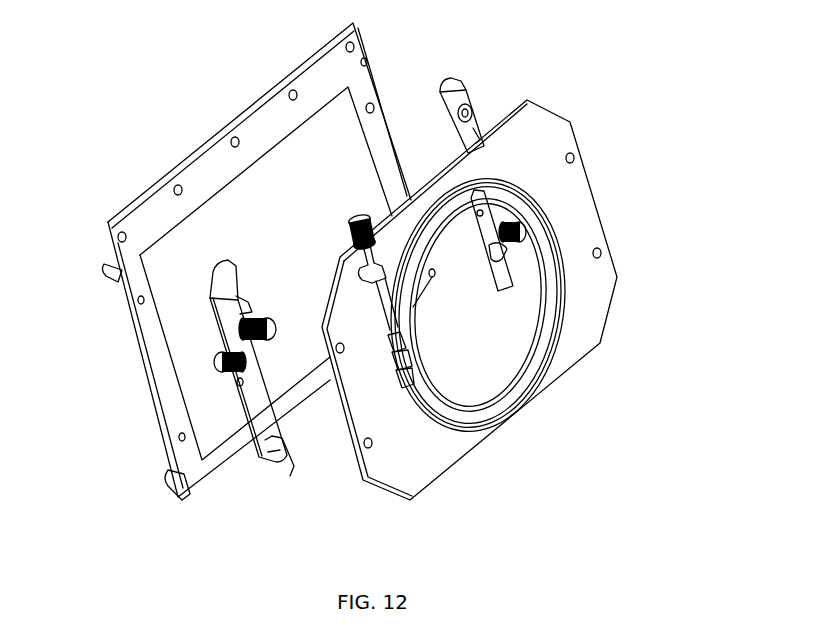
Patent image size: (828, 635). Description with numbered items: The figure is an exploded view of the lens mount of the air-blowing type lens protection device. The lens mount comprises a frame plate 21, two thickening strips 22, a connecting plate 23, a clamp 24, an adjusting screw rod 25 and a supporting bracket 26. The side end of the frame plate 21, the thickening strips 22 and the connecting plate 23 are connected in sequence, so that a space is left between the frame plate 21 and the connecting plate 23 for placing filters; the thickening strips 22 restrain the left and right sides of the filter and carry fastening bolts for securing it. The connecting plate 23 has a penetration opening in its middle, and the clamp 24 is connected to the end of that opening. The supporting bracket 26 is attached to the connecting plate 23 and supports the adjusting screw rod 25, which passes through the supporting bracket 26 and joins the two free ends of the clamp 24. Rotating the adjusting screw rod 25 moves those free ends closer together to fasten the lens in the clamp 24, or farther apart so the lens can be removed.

The frame plate 21 is at (143, 373).
The thickening strips 22 is at (260, 383).
The connecting plate 23 is at (585, 228).
The clamp 24 is at (528, 398).
The adjusting screw rod 25 is at (392, 318).
The supporting bracket 26 is at (383, 268).